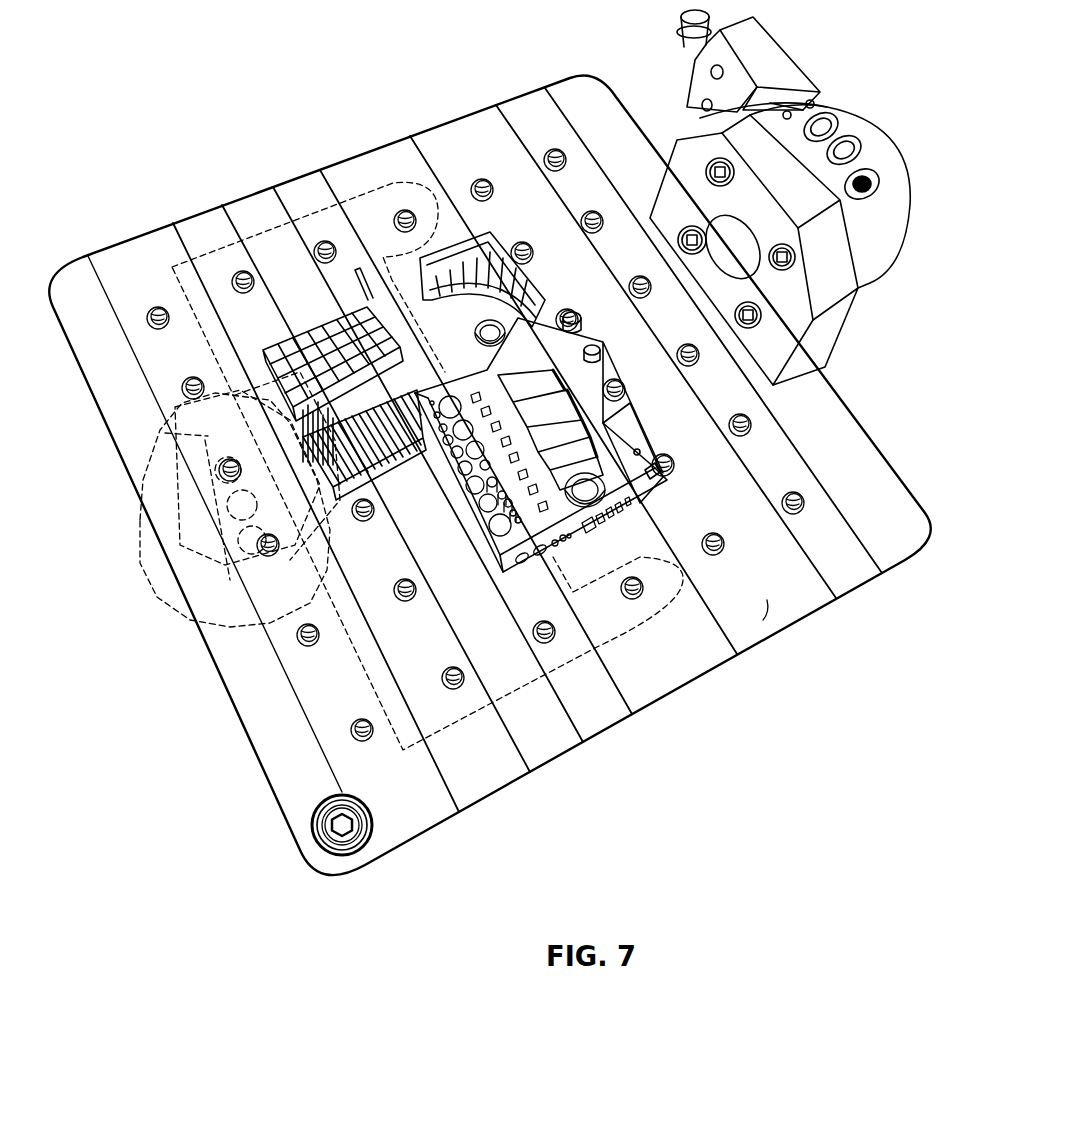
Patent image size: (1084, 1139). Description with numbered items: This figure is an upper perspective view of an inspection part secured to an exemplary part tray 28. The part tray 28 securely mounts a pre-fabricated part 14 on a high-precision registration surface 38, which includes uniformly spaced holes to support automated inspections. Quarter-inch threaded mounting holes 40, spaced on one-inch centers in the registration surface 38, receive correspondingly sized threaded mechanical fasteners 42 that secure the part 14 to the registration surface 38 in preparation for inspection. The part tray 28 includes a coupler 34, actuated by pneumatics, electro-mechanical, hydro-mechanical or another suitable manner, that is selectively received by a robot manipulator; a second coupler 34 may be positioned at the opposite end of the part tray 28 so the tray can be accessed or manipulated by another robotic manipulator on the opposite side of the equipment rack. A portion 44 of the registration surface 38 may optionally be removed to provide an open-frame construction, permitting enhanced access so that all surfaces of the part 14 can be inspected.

The pre-fabricated part 14 is at (478, 233).
The part tray 28 is at (858, 423).
The coupler 34 is at (862, 113).
The registration surface 38 is at (767, 600).
The threaded mounting holes 40 is at (805, 498).
The threaded mechanical fasteners 42 is at (483, 320).
The portion of registration surface 44 is at (527, 698).